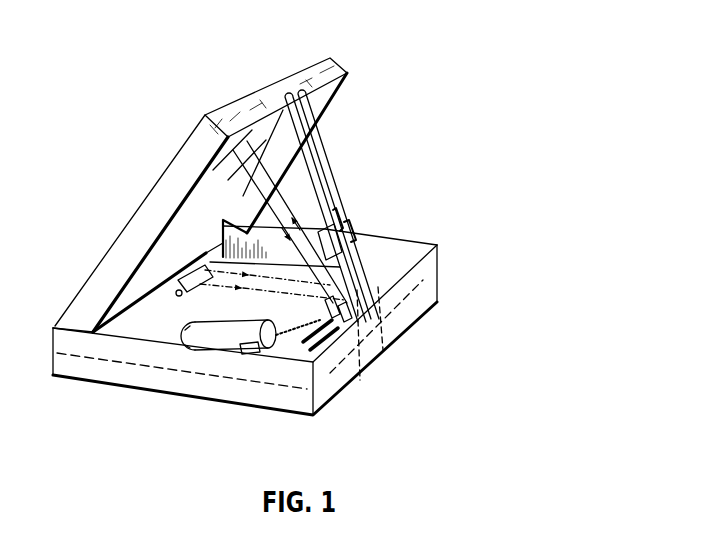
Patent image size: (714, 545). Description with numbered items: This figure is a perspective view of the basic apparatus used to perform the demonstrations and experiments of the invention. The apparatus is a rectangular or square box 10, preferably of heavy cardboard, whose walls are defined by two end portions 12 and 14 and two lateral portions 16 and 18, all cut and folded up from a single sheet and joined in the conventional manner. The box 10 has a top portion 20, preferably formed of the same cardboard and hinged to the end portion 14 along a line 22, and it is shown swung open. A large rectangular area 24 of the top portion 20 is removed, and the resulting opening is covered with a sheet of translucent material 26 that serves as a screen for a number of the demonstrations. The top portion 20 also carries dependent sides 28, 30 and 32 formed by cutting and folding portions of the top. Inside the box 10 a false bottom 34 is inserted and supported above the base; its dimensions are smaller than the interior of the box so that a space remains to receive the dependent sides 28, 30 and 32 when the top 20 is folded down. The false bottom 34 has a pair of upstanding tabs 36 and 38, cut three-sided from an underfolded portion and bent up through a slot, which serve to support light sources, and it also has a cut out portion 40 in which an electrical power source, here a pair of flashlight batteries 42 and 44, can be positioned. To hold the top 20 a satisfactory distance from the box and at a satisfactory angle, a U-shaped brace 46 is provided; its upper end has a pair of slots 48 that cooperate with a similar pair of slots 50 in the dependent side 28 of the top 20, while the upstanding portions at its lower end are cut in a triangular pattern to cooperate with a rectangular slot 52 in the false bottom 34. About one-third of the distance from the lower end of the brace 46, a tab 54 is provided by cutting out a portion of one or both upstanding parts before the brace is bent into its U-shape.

The box 10 is at (386, 217).
The end portion 12 is at (438, 278).
The end portion 14 is at (102, 290).
The lateral portion 16 is at (283, 412).
The lateral portion 18 is at (418, 244).
The top portion 20 is at (152, 172).
The line 22 is at (233, 236).
The rectangular area 24 is at (235, 213).
The sheet of translucent material 26 is at (263, 136).
The dependent side 28 is at (315, 70).
The dependent side 30 is at (345, 85).
The dependent side 32 is at (150, 204).
The false bottom 34 is at (143, 330).
The upstanding tab 36 is at (182, 295).
The upstanding tab 38 is at (352, 340).
The cut out portion 40 is at (280, 333).
The flashlight battery 42 is at (216, 324).
The flashlight battery 44 is at (240, 343).
The brace 46 is at (343, 203).
The slots 48 is at (301, 89).
The slots 50 is at (284, 106).
The rectangular slot 52 is at (380, 362).
The tab 54 is at (324, 230).